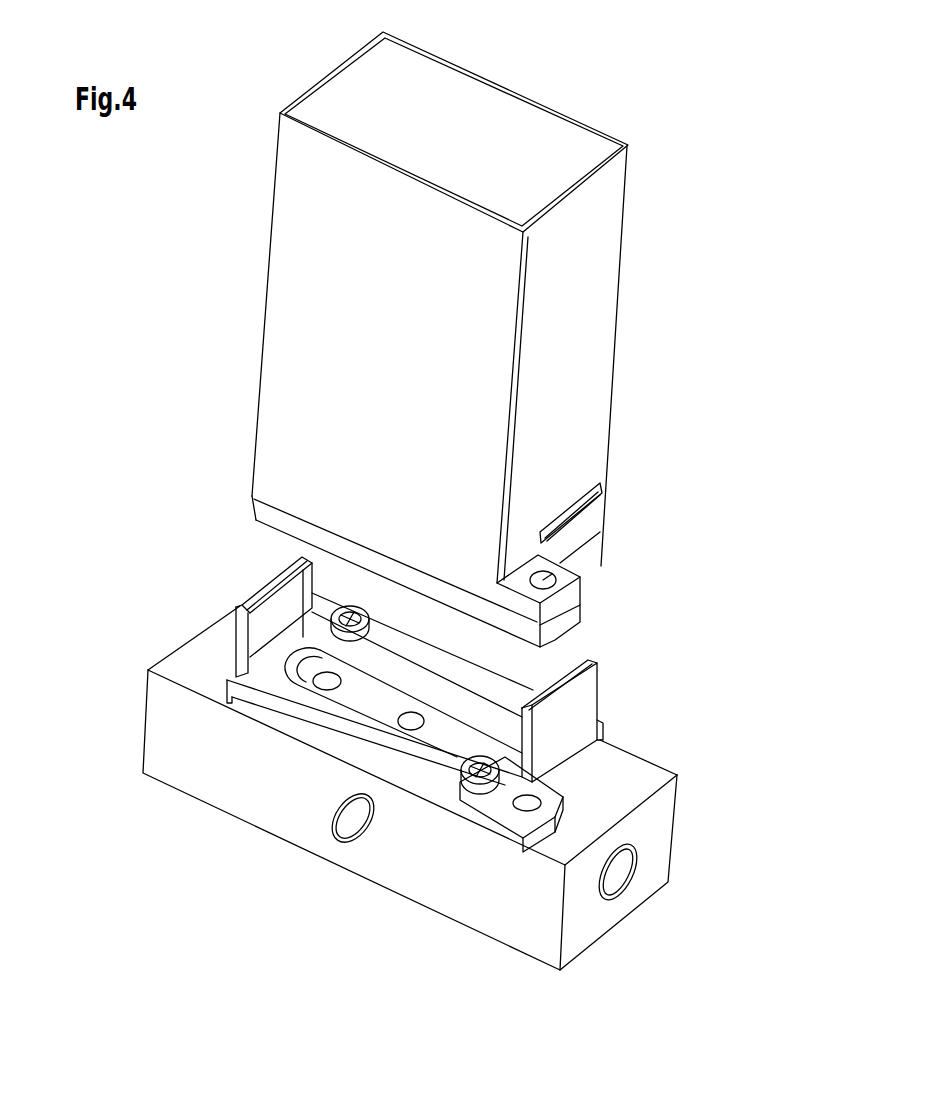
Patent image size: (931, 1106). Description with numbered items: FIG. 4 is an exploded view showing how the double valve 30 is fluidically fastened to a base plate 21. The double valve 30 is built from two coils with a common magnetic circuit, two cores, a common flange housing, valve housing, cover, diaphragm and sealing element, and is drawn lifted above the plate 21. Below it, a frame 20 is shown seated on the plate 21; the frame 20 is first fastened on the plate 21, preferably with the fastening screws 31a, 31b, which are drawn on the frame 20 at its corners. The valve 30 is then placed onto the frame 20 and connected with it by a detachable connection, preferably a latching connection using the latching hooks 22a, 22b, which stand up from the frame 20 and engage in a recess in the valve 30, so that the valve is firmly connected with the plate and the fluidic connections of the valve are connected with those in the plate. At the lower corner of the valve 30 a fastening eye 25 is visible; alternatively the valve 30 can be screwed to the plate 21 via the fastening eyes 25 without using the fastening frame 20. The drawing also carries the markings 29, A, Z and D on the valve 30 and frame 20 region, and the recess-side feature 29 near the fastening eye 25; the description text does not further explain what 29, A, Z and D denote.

The double valve 30 is at (585, 392).
The engaging tab 29 is at (607, 488).
The fastening eyes 25 is at (583, 566).
The latching hook 22a is at (272, 632).
The latching hook 22b is at (573, 710).
The plate 21 is at (630, 778).
The frame 20 is at (385, 743).
The fastening screw 31a is at (478, 797).
The fastening screw 31b is at (340, 600).
The region A is at (387, 743).
The hole Z is at (417, 728).
The dimension D is at (510, 758).